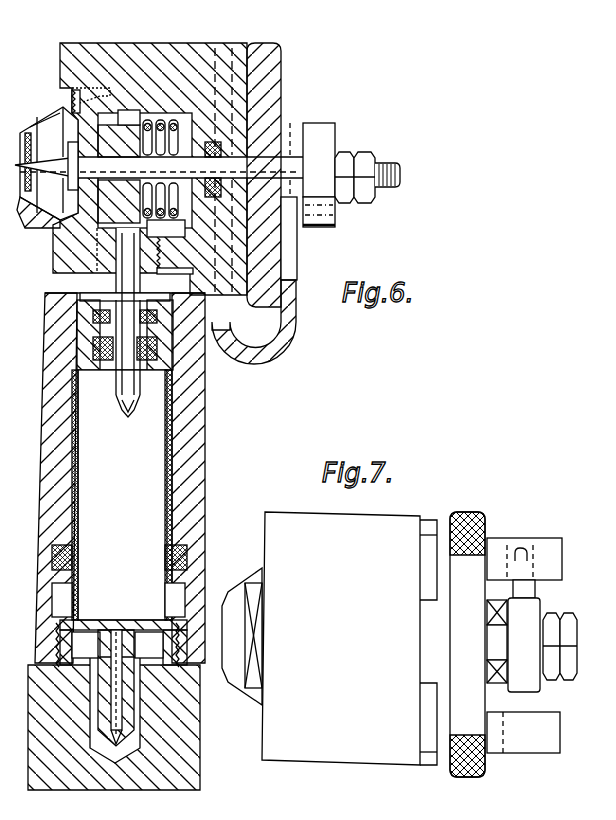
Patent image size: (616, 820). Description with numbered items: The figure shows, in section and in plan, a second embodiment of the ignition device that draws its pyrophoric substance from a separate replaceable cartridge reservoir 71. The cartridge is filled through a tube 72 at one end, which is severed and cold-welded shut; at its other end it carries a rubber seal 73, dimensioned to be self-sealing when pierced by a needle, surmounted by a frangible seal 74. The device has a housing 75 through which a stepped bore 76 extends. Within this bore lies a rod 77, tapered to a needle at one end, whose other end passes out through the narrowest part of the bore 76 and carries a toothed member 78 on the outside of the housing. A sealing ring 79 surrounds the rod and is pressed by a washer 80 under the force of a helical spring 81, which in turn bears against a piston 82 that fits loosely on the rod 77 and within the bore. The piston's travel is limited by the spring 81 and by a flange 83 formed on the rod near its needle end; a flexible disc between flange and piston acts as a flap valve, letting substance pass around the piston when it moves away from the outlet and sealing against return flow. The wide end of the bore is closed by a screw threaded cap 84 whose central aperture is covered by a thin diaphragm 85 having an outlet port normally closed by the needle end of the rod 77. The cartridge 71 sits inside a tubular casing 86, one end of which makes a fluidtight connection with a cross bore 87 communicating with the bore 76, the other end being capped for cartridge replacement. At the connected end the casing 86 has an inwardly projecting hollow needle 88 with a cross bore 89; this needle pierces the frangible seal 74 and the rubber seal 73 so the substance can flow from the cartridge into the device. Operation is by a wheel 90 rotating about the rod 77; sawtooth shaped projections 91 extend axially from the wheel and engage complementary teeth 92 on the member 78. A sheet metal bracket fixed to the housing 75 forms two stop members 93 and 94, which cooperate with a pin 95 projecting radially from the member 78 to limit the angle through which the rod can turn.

In FIG. 6, the cartridge reservoir 71 is at (115, 514).
In FIG. 6, the tube 72 is at (140, 692).
In FIG. 6, the rubber seal 73 is at (150, 350).
In FIG. 6, the frangible seal 74 is at (95, 322).
In FIG. 6, the housing 75 is at (82, 56).
In FIG. 7, the housing 75 is at (318, 762).
In FIG. 6, the stepped bore 76 is at (163, 222).
In FIG. 6, the rod 77 is at (259, 180).
In FIG. 6, the toothed member 78 is at (328, 130).
In FIG. 7, the toothed member 78 is at (512, 656).
In FIG. 6, the sealing ring 79 is at (262, 134).
In FIG. 6, the washer 80 is at (210, 148).
In FIG. 6, the helical spring 81 is at (75, 243).
In FIG. 6, the piston 82 is at (66, 104).
In FIG. 6, the flange 83 is at (68, 183).
In FIG. 6, the screw threaded cap 84 is at (50, 120).
In FIG. 7, the screw threaded cap 84 is at (238, 672).
In FIG. 6, the thin diaphragm 85 is at (14, 205).
In FIG. 6, the tubular casing 86 is at (52, 472).
In FIG. 6, the cross bore 87 is at (158, 248).
In FIG. 6, the hollow needle 88 is at (142, 392).
In FIG. 6, the cross bore 89 is at (112, 392).
In FIG. 6, the wheel 90 is at (262, 48).
In FIG. 7, the wheel 90 is at (470, 512).
In FIG. 6, the sawtooth shaped projections 91 is at (261, 235).
In FIG. 7, the sawtooth shaped projections 91 is at (497, 632).
In FIG. 6, the teeth 92 is at (300, 200).
In FIG. 7, the teeth 92 is at (495, 612).
In FIG. 7, the stop member 93 is at (550, 728).
In FIG. 7, the stop member 94 is at (540, 548).
In FIG. 7, the pin 95 is at (535, 590).